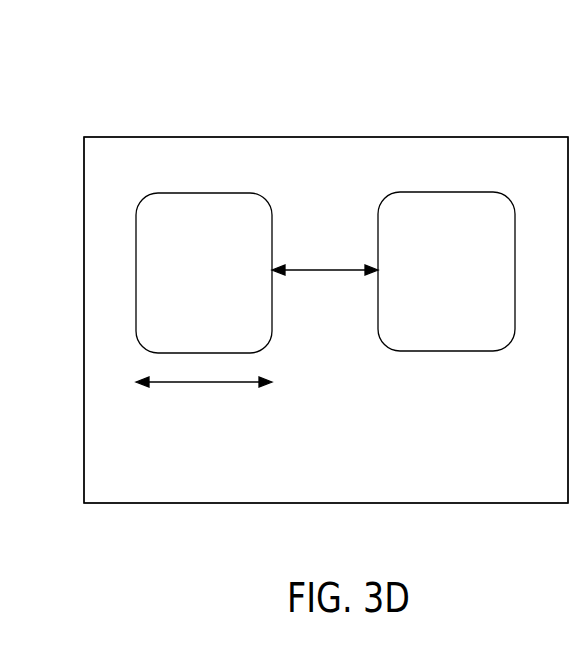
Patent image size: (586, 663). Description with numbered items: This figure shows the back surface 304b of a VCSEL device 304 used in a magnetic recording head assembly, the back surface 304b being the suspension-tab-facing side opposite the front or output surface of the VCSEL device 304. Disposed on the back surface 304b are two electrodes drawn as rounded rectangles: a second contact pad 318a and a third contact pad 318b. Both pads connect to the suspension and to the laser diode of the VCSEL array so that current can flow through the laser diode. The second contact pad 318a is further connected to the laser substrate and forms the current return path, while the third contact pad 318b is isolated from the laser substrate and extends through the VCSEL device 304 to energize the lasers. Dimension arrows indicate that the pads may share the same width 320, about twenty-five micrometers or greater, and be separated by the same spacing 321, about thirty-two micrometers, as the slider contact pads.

The VCSEL device 304 is at (241, 58).
The back surface 304b is at (355, 478).
The second contact pad 318a is at (235, 282).
The third contact pad 318b is at (479, 282).
The first width 320 is at (204, 400).
The spacing 321 is at (325, 290).